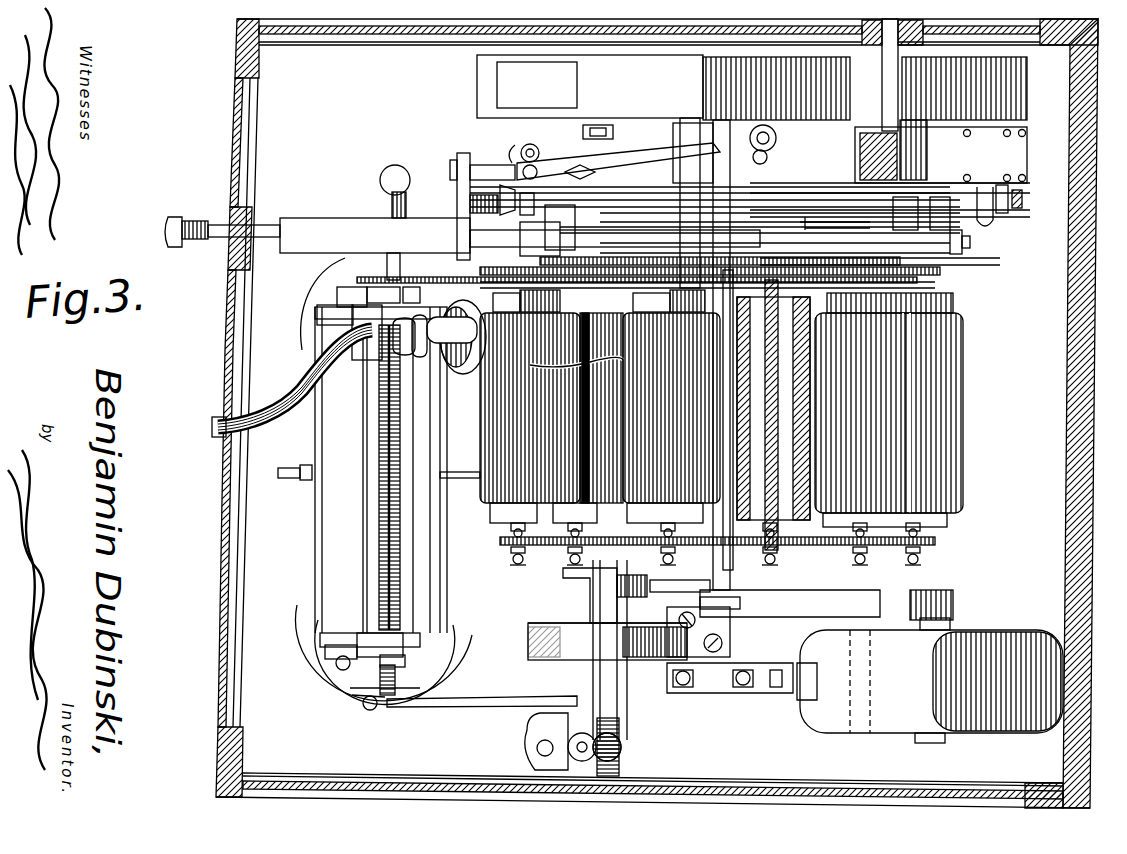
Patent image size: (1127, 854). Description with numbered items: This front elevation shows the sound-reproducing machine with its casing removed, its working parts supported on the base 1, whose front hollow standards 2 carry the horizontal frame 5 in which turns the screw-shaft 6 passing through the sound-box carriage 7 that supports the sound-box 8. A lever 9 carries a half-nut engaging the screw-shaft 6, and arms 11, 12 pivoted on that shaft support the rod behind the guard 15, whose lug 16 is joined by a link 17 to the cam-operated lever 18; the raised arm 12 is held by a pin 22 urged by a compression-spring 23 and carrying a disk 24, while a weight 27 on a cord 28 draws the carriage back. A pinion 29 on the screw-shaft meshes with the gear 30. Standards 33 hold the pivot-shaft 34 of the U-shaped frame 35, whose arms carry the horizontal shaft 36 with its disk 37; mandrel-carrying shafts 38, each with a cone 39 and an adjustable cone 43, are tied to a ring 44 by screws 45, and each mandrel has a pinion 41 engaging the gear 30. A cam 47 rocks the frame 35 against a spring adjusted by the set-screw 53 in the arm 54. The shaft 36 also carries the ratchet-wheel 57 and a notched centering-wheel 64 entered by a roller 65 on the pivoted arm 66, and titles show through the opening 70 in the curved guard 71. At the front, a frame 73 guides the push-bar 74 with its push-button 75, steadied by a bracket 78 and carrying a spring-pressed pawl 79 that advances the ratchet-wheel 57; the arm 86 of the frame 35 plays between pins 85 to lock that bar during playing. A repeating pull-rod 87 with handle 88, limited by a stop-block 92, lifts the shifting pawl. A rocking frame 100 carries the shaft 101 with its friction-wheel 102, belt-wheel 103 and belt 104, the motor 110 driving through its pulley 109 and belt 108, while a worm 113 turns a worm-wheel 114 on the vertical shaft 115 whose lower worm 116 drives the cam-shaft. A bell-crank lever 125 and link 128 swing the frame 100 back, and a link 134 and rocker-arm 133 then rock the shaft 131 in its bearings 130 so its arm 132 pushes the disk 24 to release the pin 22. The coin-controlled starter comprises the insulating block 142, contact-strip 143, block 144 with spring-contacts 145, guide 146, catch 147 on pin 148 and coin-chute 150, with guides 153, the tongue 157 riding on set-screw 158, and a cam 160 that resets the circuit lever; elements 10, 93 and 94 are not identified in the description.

The base 1 is at (290, 104).
The hollow standards 2 is at (468, 675).
The frame 5 is at (345, 293).
The screw-shaft 6 is at (377, 411).
The sound-box carriage 7 is at (365, 355).
The sound-box 8 is at (439, 337).
The lever 9 is at (362, 376).
The cylinder 10 is at (770, 452).
The arm 11 is at (350, 318).
The arm 12 is at (358, 640).
The guard 15 is at (320, 436).
The lug 16 is at (310, 472).
The link 17 is at (285, 470).
The lever 18 is at (292, 480).
The pin 22 is at (388, 712).
The coiled compression-spring 23 is at (405, 712).
The disk or arm 24 is at (352, 700).
The weight 27 is at (382, 168).
The cord or chain 28 is at (390, 200).
The pinion 29 is at (385, 262).
The gear 30 is at (487, 279).
The brackets or standards 33 is at (691, 125).
The pivot-shaft 34 is at (700, 585).
The U-shaped frame 35 is at (752, 150).
The horizontal shaft 36 is at (715, 168).
The disk 37 is at (940, 271).
The mandrel-carrying shafts 38 is at (828, 383).
The cone 39 is at (525, 285).
The pinion 41 is at (993, 304).
The adjustable cone 43 is at (717, 534).
The ring 44 is at (935, 545).
The screws 45 is at (876, 573).
The cam 47 is at (595, 173).
The adjustable set-screw 53 is at (778, 140).
The arm 54 is at (770, 156).
The ratchet-wheel 57 is at (808, 217).
The centering-wheel 64 is at (960, 268).
The antifriction-roller 65 is at (960, 258).
The pivotally-mounted arm 66 is at (760, 258).
The opening 70 is at (497, 84).
The curved guard 71 is at (590, 86).
The frame 73 is at (298, 220).
The longitudinally-movable bar 74 is at (185, 240).
The thumb-piece or push-button 75 is at (167, 224).
The bracket 78 is at (970, 242).
The spring-pressed pawl 79 is at (748, 220).
The pins 85 is at (450, 171).
The arm 86 is at (457, 153).
The pull-rod 87 is at (470, 235).
The handle or pole 88 is at (196, 220).
The stop-block 92 is at (531, 148).
The spring 93 is at (501, 143).
The pivot 94 is at (544, 162).
The rocking frame 100 is at (563, 584).
The shaft 101 is at (590, 668).
The friction-wheel 102 is at (628, 320).
The belt-wheel 103 is at (560, 618).
The belt 104 is at (528, 637).
The driving-belt 108 is at (865, 605).
The pulley 109 is at (950, 590).
The motor 110 is at (870, 670).
The worm 113 is at (640, 748).
The worm-wheel 114 is at (548, 745).
The vertical shaft 115 is at (530, 741).
The worm 116 is at (537, 760).
The bell-crank lever 125 is at (790, 607).
The link 128 is at (682, 630).
The bearings 130 is at (335, 650).
The rock-shaft 131 is at (340, 668).
The arm 132 is at (350, 690).
The rocker-arm 133 is at (368, 712).
The link 134 is at (470, 708).
The block of insulating material 142 is at (893, 182).
The contact-strip 143 is at (872, 220).
The block 144 is at (1022, 217).
The spring-contacts 145 is at (935, 200).
The guide 146 is at (987, 190).
The catch 147 is at (1010, 170).
The pin 148 is at (1022, 195).
The coin-chute 150 is at (1022, 130).
The guides 153 is at (470, 207).
The inclined tongue or cam 157 is at (500, 200).
The set-screw 158 is at (492, 171).
The cam 160 is at (600, 194).